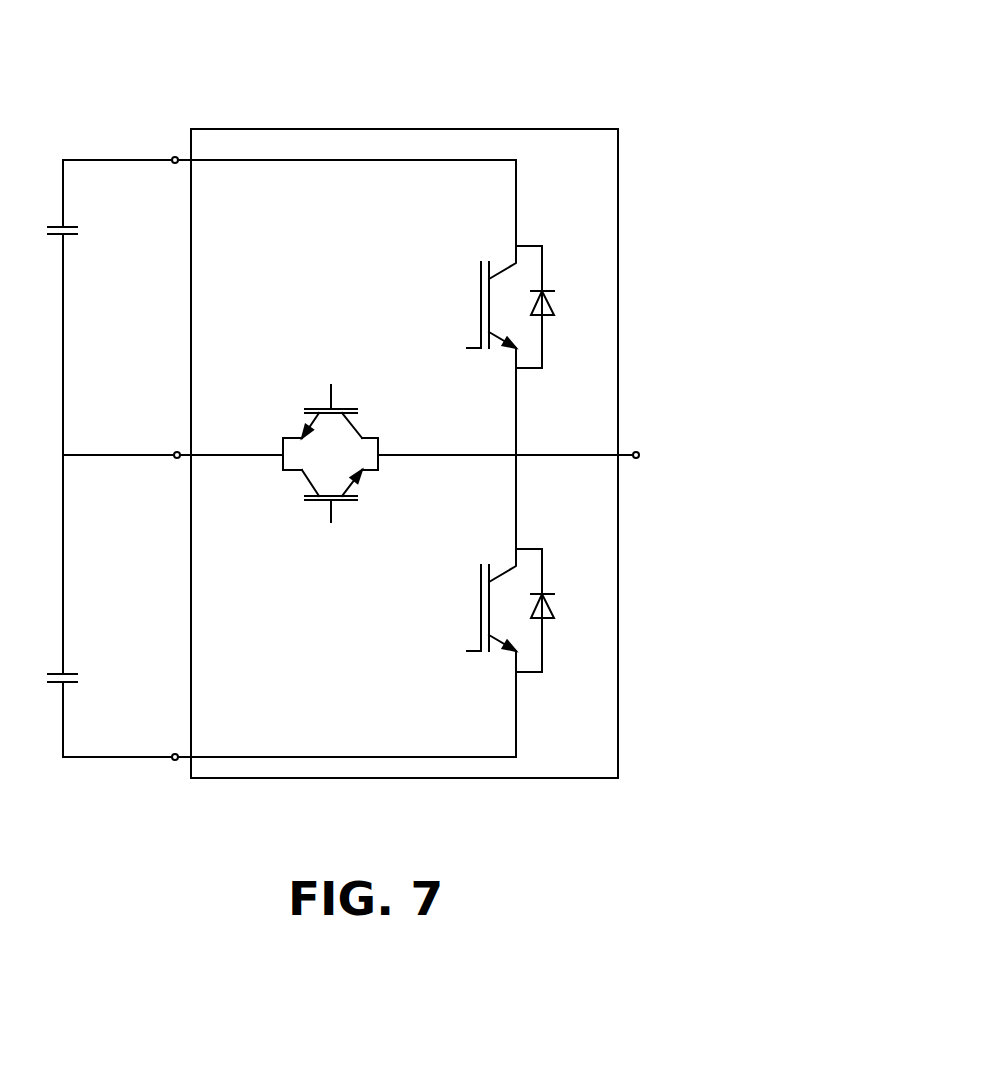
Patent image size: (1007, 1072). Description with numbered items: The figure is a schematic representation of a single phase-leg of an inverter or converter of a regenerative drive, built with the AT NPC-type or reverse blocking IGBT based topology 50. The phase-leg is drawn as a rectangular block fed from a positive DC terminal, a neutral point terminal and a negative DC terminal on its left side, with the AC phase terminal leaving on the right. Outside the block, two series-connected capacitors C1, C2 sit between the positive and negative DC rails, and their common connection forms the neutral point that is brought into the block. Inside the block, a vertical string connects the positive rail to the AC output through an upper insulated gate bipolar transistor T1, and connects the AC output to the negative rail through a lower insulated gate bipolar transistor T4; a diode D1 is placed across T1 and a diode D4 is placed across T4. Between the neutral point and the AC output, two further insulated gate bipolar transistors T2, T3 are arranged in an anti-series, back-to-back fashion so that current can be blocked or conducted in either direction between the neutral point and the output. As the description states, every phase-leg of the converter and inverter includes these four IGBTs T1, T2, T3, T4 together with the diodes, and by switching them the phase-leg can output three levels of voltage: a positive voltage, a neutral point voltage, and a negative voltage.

The AT NPC-type or reverse blocking IGBT based topology 50 is at (365, 395).
The upper DC-link capacitor C1 is at (82, 231).
The lower DC-link capacitor C2 is at (82, 679).
The insulated gate bipolar transistor T1 is at (479, 307).
The diode D1 is at (560, 307).
The insulated gate bipolar transistor T4 is at (479, 610).
The diode D4 is at (560, 610).
The insulated gate bipolar transistor T2 is at (339, 402).
The insulated gate bipolar transistor T3 is at (339, 504).